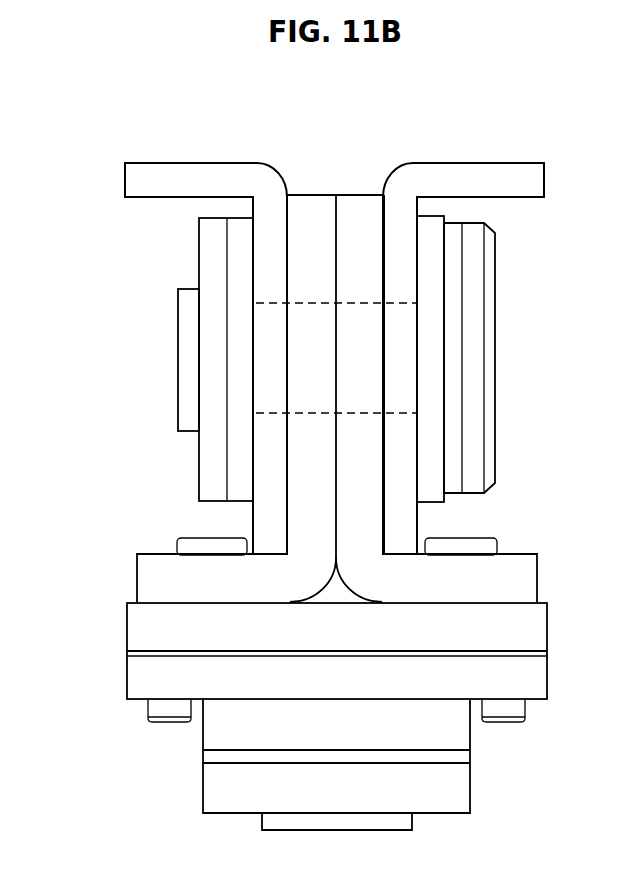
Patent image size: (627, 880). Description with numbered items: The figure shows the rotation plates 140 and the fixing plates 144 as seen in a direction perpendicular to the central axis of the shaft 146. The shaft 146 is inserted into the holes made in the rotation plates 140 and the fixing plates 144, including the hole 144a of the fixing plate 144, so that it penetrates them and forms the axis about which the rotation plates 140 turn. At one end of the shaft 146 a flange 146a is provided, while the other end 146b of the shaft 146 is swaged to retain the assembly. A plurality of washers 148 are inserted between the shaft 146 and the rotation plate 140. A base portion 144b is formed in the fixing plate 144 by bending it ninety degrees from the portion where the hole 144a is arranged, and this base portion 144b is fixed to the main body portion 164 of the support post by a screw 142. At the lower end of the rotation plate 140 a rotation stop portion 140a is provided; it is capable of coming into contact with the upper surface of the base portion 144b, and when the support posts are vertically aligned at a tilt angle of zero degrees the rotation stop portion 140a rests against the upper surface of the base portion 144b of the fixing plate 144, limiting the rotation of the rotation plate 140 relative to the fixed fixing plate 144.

The rotation plate 140 is at (238, 178).
The rotation stop portion 140a is at (275, 413).
The screw 142 is at (195, 543).
The fixing plate 144 is at (302, 210).
The hole 144a is at (307, 304).
The base portion 144b is at (158, 578).
The shaft 146 is at (498, 441).
The flange 146a is at (478, 383).
The other end of shaft 146b is at (188, 338).
The washer 148 is at (240, 227).
The main body portion 164 is at (530, 623).